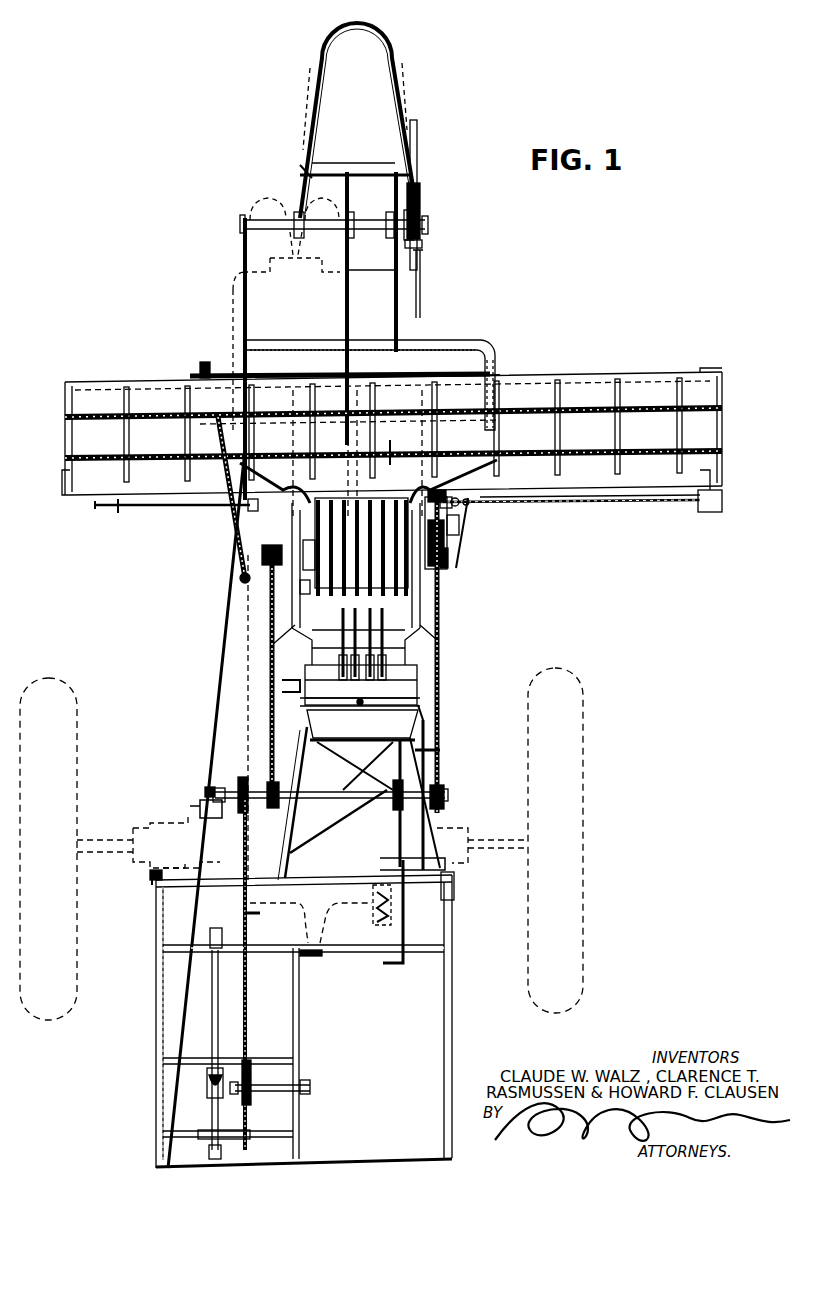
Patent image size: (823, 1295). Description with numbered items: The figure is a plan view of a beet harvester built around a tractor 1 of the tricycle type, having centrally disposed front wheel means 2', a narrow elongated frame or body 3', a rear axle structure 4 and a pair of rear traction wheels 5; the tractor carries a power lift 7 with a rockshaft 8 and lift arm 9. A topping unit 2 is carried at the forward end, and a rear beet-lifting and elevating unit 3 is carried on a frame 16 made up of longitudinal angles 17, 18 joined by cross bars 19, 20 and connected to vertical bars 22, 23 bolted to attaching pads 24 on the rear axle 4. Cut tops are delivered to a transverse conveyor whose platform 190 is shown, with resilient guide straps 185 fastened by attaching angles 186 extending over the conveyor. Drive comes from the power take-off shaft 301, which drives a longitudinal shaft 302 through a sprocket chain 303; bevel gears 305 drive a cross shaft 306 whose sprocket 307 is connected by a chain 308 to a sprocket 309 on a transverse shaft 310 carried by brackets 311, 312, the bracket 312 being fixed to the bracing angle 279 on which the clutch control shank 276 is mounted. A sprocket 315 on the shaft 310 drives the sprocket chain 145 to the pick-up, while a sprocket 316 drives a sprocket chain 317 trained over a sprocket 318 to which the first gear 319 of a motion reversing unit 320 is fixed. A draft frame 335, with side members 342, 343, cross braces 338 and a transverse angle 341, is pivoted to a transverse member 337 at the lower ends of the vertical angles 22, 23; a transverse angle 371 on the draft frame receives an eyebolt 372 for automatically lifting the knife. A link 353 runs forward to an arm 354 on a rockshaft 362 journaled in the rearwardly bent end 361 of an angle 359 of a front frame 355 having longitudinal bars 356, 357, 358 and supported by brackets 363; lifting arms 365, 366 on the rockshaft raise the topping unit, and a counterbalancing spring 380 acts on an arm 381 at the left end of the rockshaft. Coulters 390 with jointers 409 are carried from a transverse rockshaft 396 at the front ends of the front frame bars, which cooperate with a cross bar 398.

The tractor 1 is at (233, 666).
The topping unit 2 is at (390, 601).
The front wheel means 2' is at (292, 211).
The beet-lifting and elevating unit 3 is at (324, 1021).
The frame or body 3' is at (223, 613).
The rear axle structure 4 is at (166, 820).
The rear traction wheels 5 is at (72, 696).
The power lift 7 is at (278, 920).
The rockshaft 8 is at (212, 880).
The lift arm 9 is at (382, 912).
The frame 16 is at (148, 1047).
The longitudinally extending angle 17 is at (163, 1073).
The longitudinally extending angle 18 is at (446, 1030).
The cross bar 19 is at (340, 1156).
The cross bar 20 is at (343, 952).
The vertical bar 22 is at (455, 880).
The vertical bar 23 is at (152, 882).
The attaching pads 24 is at (148, 876).
The sprocket chain 145 is at (270, 700).
The guide straps 185 is at (212, 462).
The attaching angles 186 is at (460, 478).
The platform 190 is at (641, 376).
The shank section 276 is at (462, 546).
The angle 279 is at (398, 838).
The power take-off shaft 301 is at (322, 936).
The longitudinal shaft 302 is at (215, 1022).
The sprocket chain 303 is at (262, 960).
The bevel gears 305 is at (210, 1092).
The cross shaft 306 is at (268, 1092).
The sprocket 307 is at (246, 1110).
The chain 308 is at (244, 915).
The sprocket 309 is at (242, 778).
The transverse shaft 310 is at (323, 790).
The bracket 311 is at (212, 790).
The bracket 312 is at (390, 798).
The sprocket 315 is at (267, 802).
The sprocket 316 is at (446, 806).
The sprocket chain 317 is at (440, 690).
The sprocket 318 is at (446, 568).
The first gear 319 is at (460, 560).
The motion reversing unit 320 is at (452, 532).
The draft frame 335 is at (298, 760).
The transverse member 337 is at (320, 875).
The cross braces 338 is at (385, 752).
The transverse angle 341 is at (428, 760).
The side member 342 is at (330, 742).
The side member 343 is at (420, 712).
The link 353 is at (388, 456).
The arm 354 is at (390, 392).
The front frame 355 is at (454, 328).
The longitudinal bar 356 is at (243, 308).
The longitudinal bar 357 is at (345, 320).
The longitudinal bar 358 is at (396, 305).
The angle 359 is at (418, 320).
The rearwardly bent end 361 is at (494, 385).
The rockshaft 362 is at (382, 466).
The brackets 363 is at (348, 430).
The lifting arm 365 is at (450, 392).
The lifting arm 366 is at (200, 388).
The transverse angle 371 is at (418, 705).
The eyebolt 372 is at (306, 690).
The counterbalancing spring 380 is at (222, 510).
The arm 381 is at (226, 400).
The coulters 390 is at (394, 82).
The transverse rockshaft 396 is at (363, 218).
The cross bar 398 is at (313, 172).
The jointer 409 is at (402, 128).